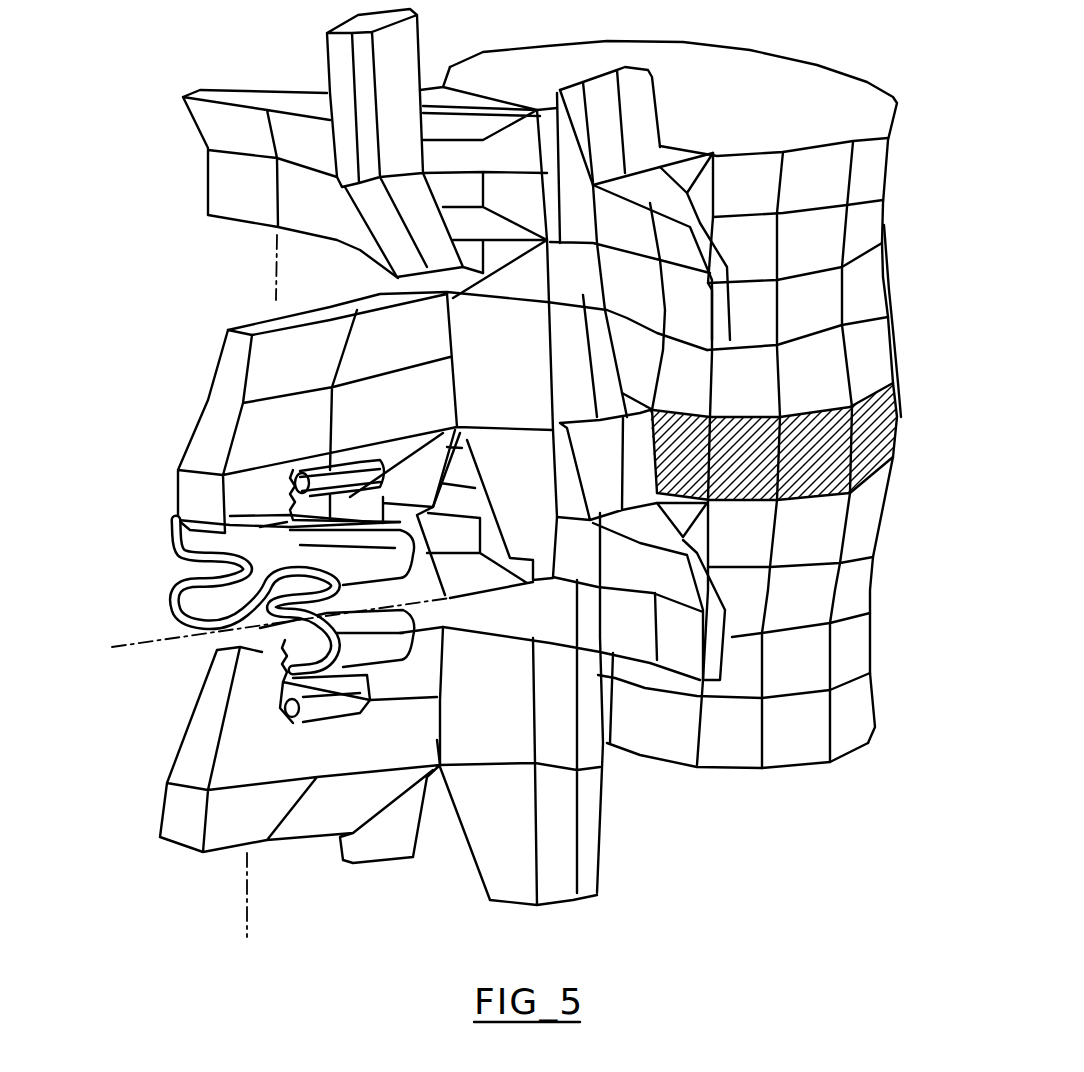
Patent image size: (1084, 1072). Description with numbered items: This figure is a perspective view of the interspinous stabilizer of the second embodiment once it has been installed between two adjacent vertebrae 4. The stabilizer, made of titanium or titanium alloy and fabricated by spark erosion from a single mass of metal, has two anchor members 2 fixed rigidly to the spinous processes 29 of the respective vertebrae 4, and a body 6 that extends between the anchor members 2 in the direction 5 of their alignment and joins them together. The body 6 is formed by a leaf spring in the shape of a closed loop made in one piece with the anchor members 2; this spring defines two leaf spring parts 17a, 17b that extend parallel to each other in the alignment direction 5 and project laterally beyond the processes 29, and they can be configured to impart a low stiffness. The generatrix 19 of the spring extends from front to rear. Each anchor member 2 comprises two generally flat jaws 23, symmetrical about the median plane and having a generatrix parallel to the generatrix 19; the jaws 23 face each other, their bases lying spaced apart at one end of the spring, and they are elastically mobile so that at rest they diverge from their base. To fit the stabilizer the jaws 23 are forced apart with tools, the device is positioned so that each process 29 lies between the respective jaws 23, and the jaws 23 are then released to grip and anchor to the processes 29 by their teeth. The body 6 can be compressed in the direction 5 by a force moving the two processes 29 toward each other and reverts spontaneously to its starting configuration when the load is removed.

The anchor member 2 is at (346, 472).
The vertebra 4 is at (853, 243).
The alignment direction 5 is at (248, 873).
The body 6 is at (172, 605).
The leaf spring part 17a is at (172, 543).
The leaf spring part 17b is at (380, 650).
The generatrix 19 is at (133, 647).
The jaw 23 is at (355, 450).
The spinous process 29 is at (217, 387).